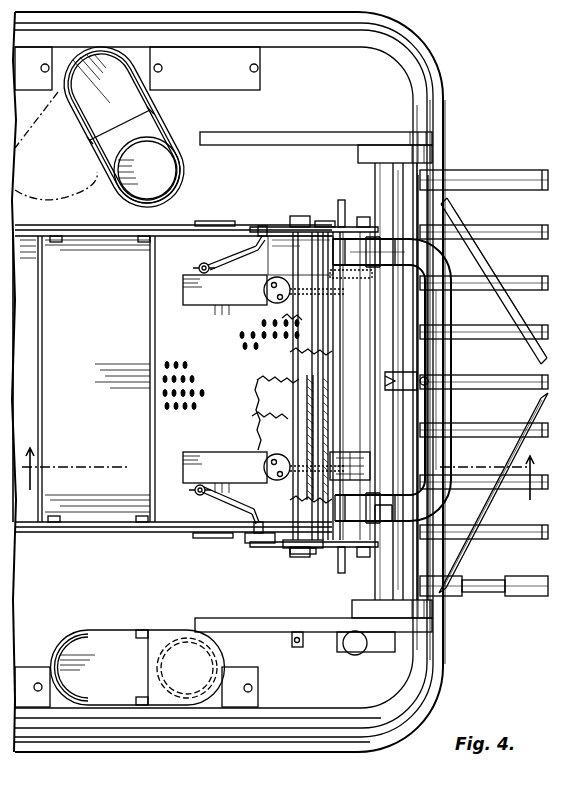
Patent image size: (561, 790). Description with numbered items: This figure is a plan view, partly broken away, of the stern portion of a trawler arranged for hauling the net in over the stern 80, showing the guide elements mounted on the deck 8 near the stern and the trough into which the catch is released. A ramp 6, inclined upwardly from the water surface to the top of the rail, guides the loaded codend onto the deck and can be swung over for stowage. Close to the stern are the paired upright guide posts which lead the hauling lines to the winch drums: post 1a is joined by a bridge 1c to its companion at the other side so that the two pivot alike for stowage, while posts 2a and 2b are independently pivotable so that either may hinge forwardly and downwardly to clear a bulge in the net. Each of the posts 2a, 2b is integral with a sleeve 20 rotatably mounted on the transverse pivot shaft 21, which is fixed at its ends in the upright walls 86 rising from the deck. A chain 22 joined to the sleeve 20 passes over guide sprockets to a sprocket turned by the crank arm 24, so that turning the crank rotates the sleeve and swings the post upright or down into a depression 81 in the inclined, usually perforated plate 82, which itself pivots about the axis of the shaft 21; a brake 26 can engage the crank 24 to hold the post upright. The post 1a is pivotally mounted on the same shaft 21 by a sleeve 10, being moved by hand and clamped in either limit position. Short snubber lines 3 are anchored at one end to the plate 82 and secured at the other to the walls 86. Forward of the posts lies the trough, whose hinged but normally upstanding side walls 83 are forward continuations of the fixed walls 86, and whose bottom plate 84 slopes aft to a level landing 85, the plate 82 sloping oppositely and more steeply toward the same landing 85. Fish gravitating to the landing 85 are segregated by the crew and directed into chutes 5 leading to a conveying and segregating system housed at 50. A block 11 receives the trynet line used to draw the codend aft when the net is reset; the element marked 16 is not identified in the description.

The post 1a is at (362, 230).
The bridge 1c is at (452, 355).
The post 2a is at (272, 300).
The post 2b is at (268, 460).
The snubber lines 3 is at (228, 258).
The chutes 5 is at (160, 128).
The ramp 6 is at (510, 170).
The deck 8 is at (341, 101).
The sleeves 10 is at (305, 258).
The block 11 is at (388, 375).
The elbow 16 is at (382, 522).
The sleeve 20 is at (258, 420).
The pivot shaft 21 is at (300, 371).
The chain 22 is at (348, 302).
The crank arm 24 is at (333, 206).
The brake 26 is at (300, 556).
The housing 50 is at (227, 83).
The stern 80 is at (447, 98).
The depression 81 is at (198, 289).
The plate 82 is at (165, 415).
The side walls 83 is at (106, 222).
The bottom plate 84 is at (45, 407).
The landing 85 is at (106, 334).
The walls 86 is at (250, 543).